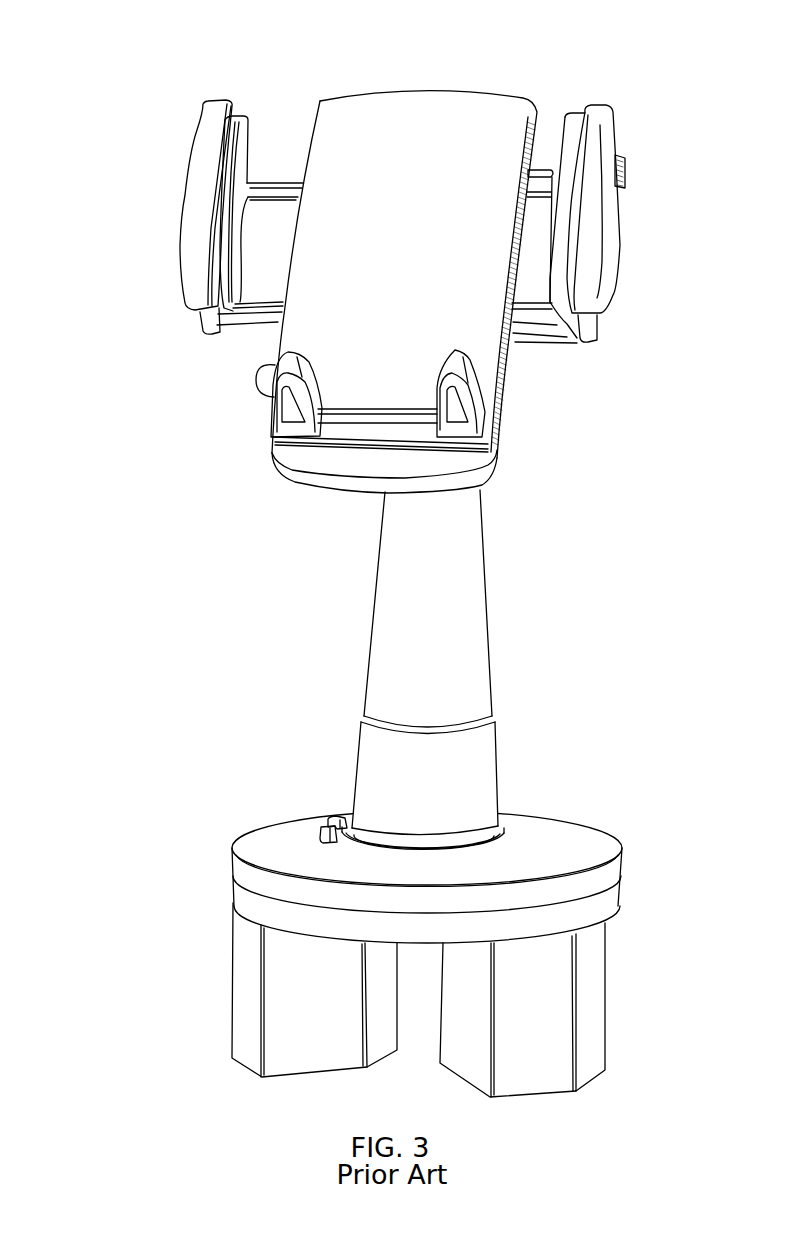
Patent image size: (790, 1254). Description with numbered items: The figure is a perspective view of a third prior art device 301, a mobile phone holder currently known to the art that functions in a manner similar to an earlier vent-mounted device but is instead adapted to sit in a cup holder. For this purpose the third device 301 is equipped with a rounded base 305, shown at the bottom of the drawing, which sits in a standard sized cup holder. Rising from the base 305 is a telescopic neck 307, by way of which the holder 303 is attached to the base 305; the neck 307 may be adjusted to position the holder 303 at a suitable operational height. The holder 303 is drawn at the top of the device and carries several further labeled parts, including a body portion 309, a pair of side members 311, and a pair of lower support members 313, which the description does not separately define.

The third prior art device 301 is at (141, 57).
The holder 303 is at (272, 79).
The rounded base 305 is at (234, 792).
The telescopic neck 307 is at (374, 605).
The cradle body 309 is at (441, 89).
The side clamp pads 311 is at (186, 170).
The bottom support hooks 313 is at (274, 400).